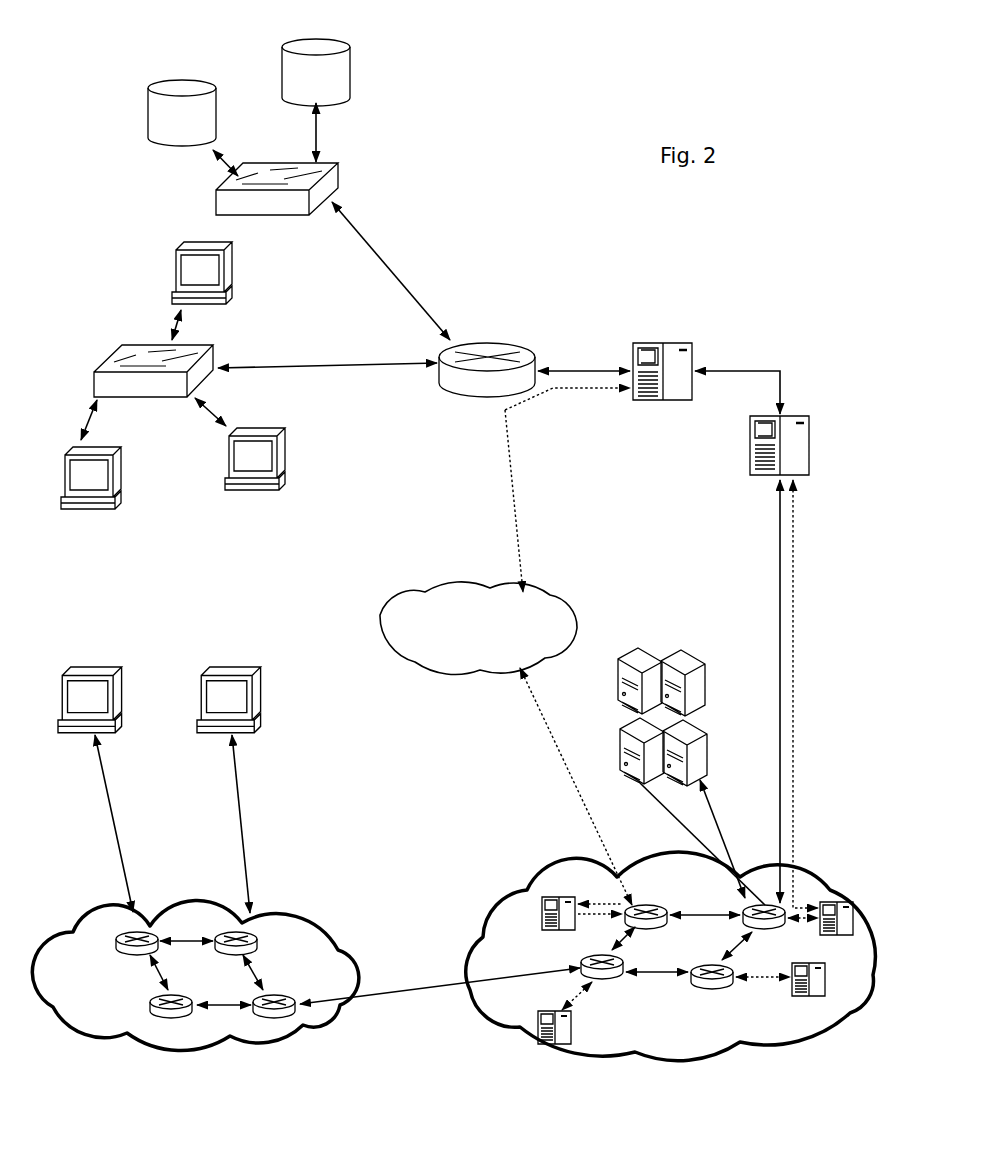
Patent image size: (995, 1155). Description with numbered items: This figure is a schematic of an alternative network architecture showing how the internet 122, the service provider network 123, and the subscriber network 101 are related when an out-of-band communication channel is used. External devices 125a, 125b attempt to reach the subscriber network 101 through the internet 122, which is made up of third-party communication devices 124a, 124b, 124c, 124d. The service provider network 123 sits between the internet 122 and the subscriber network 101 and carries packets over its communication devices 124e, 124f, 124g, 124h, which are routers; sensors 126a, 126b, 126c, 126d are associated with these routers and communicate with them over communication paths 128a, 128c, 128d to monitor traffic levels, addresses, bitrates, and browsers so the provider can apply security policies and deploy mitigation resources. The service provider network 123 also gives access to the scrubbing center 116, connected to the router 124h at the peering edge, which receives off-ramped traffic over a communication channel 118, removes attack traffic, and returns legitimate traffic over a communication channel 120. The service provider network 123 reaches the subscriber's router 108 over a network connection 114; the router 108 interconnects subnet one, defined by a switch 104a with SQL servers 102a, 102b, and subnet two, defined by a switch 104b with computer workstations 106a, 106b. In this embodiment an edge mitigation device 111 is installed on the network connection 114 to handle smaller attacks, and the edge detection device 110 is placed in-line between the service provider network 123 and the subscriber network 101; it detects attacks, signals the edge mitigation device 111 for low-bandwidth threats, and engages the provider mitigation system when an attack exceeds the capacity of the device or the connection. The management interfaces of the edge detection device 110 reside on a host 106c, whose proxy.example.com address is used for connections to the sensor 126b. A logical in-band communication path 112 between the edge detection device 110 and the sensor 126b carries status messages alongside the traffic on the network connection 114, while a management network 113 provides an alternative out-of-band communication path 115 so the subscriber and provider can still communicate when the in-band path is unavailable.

The subscriber network 101 is at (459, 120).
The SQL server 102a is at (318, 46).
The SQL server 102b is at (183, 87).
The switch 104a is at (338, 170).
The switch 104b is at (137, 345).
The computer workstation 106a is at (203, 243).
The computer workstation 106b is at (258, 430).
The host 106c is at (95, 447).
The subscriber communications device 108 is at (490, 340).
The edge detection device 110 is at (750, 445).
The edge mitigation device 111 is at (662, 343).
The communication path 112 is at (793, 675).
The management network 113 is at (410, 592).
The network connection 114 is at (780, 524).
The alternative communication path 115 is at (513, 480).
The scrubbing center 116 is at (712, 693).
The communication channel 118 is at (714, 806).
The communication channel 120 is at (663, 806).
The internet 122 is at (262, 915).
The service provider network 123 is at (550, 855).
The third-party communication device 124a is at (128, 932).
The third-party communication device 124b is at (232, 932).
The third-party communication device 124c is at (150, 1000).
The third-party communication device 124d is at (277, 995).
The communication device 124e is at (655, 908).
The communication device 124f is at (620, 960).
The communication device 124g is at (702, 990).
The router 124h is at (764, 930).
The external device 125a is at (93, 669).
The external device 125b is at (232, 669).
The sensor 126a is at (545, 897).
The sensor 126b is at (848, 902).
The sensor 126c is at (540, 1028).
The sensor 126d is at (828, 985).
The communication path 128a is at (612, 905).
The communication path 128c is at (570, 1000).
The communication path 128d is at (752, 983).